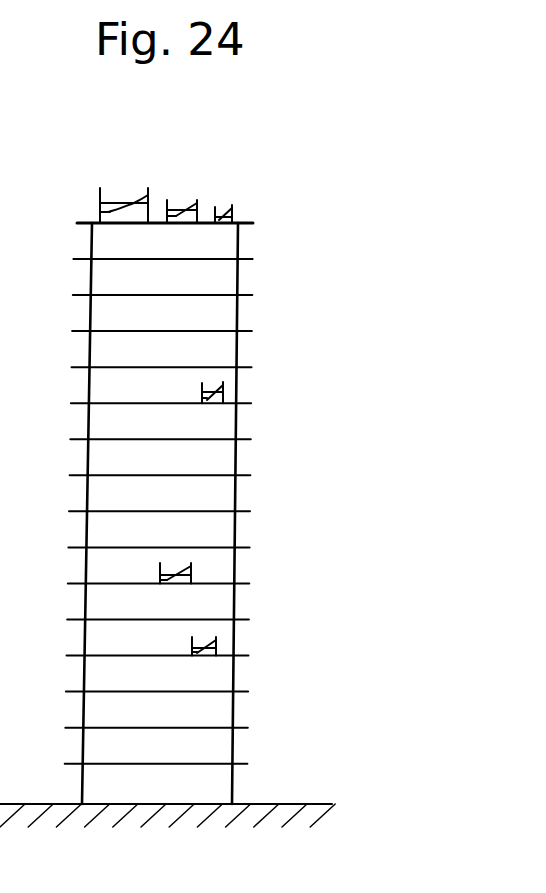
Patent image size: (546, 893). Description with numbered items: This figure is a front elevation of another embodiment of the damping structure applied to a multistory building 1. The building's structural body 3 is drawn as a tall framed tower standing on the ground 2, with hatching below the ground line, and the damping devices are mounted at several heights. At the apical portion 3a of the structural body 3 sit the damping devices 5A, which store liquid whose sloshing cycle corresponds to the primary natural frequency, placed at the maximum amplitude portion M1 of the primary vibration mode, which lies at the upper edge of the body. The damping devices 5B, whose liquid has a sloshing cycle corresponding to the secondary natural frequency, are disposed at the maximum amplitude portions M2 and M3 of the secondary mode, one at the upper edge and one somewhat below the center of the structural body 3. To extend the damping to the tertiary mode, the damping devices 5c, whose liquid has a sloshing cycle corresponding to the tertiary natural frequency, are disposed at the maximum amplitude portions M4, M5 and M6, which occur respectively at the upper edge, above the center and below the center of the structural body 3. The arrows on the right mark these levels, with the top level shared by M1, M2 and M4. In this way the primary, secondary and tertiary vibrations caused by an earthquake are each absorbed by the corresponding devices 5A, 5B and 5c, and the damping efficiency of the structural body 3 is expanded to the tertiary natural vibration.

The multistory building 1 is at (313, 308).
The ground 2 is at (332, 803).
The structural body 3 is at (59, 343).
The apical portion 3a is at (251, 223).
The damping devices 5A is at (100, 189).
The damping devices 5B is at (197, 201).
The damping devices 5c is at (234, 207).
The maximum amplitude portion M1 is at (340, 207).
The maximum amplitude portion M2 is at (449, 205).
The maximum amplitude portion M3 is at (325, 575).
The maximum amplitude portion M4 is at (496, 205).
The maximum amplitude portion M5 is at (328, 393).
The maximum amplitude portion M6 is at (320, 653).